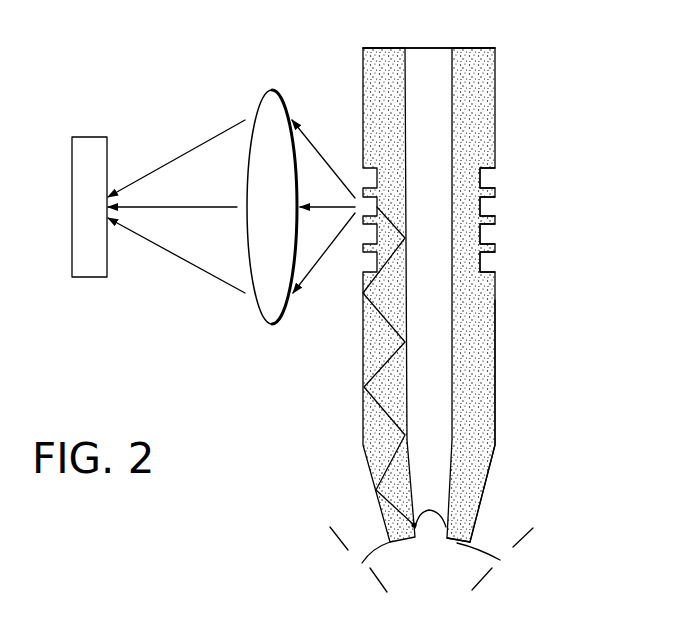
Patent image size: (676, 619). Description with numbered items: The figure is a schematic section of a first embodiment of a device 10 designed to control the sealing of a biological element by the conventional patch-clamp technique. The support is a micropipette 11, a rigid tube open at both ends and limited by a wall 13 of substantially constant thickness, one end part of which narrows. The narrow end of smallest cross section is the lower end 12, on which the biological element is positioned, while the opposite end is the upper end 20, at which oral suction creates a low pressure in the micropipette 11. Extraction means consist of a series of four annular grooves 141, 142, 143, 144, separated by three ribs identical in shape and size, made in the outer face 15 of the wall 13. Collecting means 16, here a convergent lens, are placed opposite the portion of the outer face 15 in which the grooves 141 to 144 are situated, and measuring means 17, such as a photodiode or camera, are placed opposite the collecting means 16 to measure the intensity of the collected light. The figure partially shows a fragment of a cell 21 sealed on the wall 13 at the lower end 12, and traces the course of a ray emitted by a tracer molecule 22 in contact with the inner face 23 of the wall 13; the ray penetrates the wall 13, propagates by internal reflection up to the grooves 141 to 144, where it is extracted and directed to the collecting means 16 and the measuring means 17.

The device 10 is at (170, 112).
The micropipette 11 is at (499, 45).
The lower end 12 is at (456, 540).
The wall 13 is at (478, 108).
The annular groove 141 is at (497, 177).
The annular groove 142 is at (489, 206).
The annular groove 143 is at (489, 232).
The annular groove 144 is at (489, 262).
The outer face 15 is at (497, 377).
The collecting means 16 is at (271, 296).
The measuring means 17 is at (85, 262).
The upper end 20 is at (383, 47).
The cell 21 is at (425, 562).
The molecule 22 is at (396, 527).
The inner face 23 is at (448, 481).